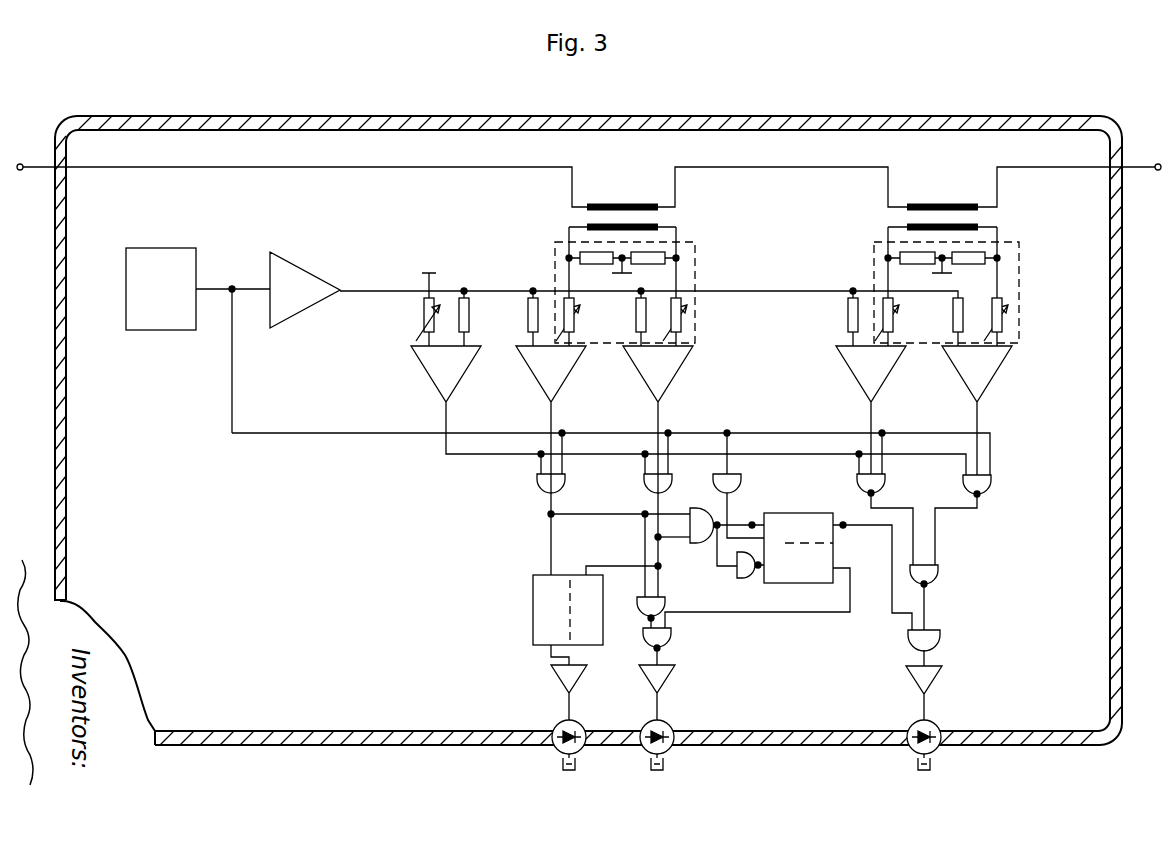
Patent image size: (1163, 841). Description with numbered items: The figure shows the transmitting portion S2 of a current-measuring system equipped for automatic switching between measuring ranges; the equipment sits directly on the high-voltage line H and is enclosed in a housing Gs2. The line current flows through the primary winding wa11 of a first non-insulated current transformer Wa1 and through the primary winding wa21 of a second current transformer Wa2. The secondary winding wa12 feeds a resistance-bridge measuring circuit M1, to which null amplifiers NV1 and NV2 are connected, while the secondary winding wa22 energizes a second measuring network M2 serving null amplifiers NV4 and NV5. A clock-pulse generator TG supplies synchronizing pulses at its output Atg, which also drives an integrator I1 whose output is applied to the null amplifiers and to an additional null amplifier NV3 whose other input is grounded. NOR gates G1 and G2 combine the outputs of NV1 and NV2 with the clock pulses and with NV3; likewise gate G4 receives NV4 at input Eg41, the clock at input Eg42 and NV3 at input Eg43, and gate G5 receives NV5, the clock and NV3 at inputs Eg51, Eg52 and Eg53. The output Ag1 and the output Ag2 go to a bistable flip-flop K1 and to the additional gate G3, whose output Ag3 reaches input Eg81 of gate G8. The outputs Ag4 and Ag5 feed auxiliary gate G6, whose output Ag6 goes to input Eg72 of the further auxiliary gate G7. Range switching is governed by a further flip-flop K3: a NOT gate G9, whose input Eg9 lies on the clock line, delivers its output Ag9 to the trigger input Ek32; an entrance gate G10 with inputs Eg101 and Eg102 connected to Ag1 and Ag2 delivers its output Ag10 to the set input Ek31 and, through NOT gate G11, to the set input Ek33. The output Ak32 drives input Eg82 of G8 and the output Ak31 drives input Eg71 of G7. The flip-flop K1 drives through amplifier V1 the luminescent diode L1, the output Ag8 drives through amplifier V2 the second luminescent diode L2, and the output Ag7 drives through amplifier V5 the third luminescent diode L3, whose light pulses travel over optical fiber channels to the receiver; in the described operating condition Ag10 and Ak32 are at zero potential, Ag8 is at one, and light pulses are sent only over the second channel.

The shielded housing S2 is at (884, 150).
The housing Gs2 is at (1016, 130).
The high-voltage line H is at (1138, 167).
The non-insulated current transformer Wa1 is at (595, 213).
The primary winding wa11 is at (600, 198).
The secondary winding wa12 is at (577, 238).
The measuring circuit M1 is at (697, 280).
The second non-insulated current transformer Wa2 is at (964, 194).
The primary winding wa21 is at (958, 210).
The secondary winding wa22 is at (978, 228).
The second measuring network M2 is at (1020, 284).
The clock-pulse generator TG is at (161, 289).
The output of clock-pulse generator Atg is at (214, 289).
The integrator I1 is at (614, 290).
The null amplifier NV1 is at (530, 372).
The null amplifier NV2 is at (648, 372).
The additional null amplifier NV3 is at (430, 372).
The null amplifier NV4 is at (858, 378).
The null amplifier NV5 is at (972, 378).
The NOR gate G1 is at (540, 481).
The NOR gate G2 is at (652, 479).
The additional NOR gate G3 is at (637, 599).
The NOR gate G4 is at (882, 483).
The NOR gate G5 is at (990, 488).
The auxiliary gate G6 is at (935, 574).
The further auxiliary gate G7 is at (907, 653).
The additional gate G8 is at (671, 641).
The NOT gate G9 is at (714, 472).
The entrance gate G10 is at (693, 515).
The further NOT gate G11 is at (746, 580).
The output of gate G1 Ag1 is at (545, 495).
The output of gate G2 Ag2 is at (655, 494).
The output of gate G3 Ag3 is at (665, 616).
The output of gate G4 Ag4 is at (878, 497).
The output of gate G5 Ag5 is at (985, 496).
The output of gate G6 Ag6 is at (928, 583).
The output of gate G7 Ag7 is at (928, 649).
The output of gate G8 Ag8 is at (653, 649).
The output of NOT gate G9 Ag9 is at (737, 491).
The output of entrance gate G10 Ag10 is at (718, 520).
The input of NOT gate G9 Eg9 is at (729, 460).
The input of gate G4 Eg41 is at (856, 452).
The input of gate G4 Eg42 is at (882, 470).
The third input of gate G4 Eg43 is at (858, 474).
The input of gate G5 Eg51 is at (975, 472).
The input of gate G5 Eg52 is at (990, 478).
The third input of gate G5 Eg53 is at (984, 462).
The input of gate G7 Eg71 is at (910, 625).
The input of gate G7 Eg72 is at (926, 628).
The input of gate G8 Eg81 is at (646, 623).
The input of gate G8 Eg82 is at (669, 624).
The input of entrance gate G10 Eg101 is at (653, 524).
The input of entrance gate G10 Eg102 is at (662, 539).
The bistable flip-flop K1 is at (595, 589).
The further bistable flip-flop K3 is at (788, 560).
The set input of flip-flop K3 Ek31 is at (749, 522).
The trigger input of flip-flop K3 Ek32 is at (784, 531).
The set input of flip-flop K3 Ek33 is at (784, 573).
The output of flip-flop K3 Ak31 is at (843, 523).
The output of flip-flop K3 Ak32 is at (850, 592).
The amplifier V1 is at (562, 673).
The amplifier V2 is at (650, 673).
The amplifier V5 is at (935, 690).
The luminescent diode L1 is at (558, 749).
The second luminescent diode L2 is at (646, 749).
The third luminescent diode L3 is at (912, 730).